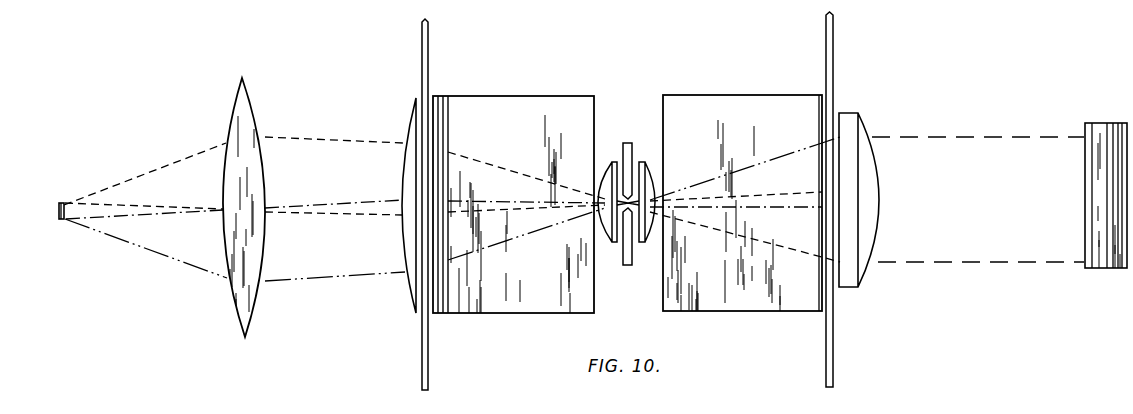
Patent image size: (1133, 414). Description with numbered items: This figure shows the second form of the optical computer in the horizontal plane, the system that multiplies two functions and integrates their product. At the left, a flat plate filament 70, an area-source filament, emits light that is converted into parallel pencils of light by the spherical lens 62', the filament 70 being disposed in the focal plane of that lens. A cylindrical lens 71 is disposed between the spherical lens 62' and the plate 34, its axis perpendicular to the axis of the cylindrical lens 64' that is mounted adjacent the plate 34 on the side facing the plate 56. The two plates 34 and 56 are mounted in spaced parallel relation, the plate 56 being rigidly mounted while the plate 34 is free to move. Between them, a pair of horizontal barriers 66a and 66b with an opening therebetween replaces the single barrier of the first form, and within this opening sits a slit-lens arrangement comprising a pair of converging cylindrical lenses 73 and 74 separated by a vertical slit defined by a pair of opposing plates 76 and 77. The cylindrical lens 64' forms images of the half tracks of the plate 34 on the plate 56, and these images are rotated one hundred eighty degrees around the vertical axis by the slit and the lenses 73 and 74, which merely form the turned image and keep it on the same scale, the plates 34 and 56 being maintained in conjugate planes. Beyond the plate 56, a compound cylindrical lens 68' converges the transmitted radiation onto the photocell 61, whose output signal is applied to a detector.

The flat plate filament 70 is at (58, 212).
The spherical lens 62' is at (222, 207).
The cylindrical lens 71 is at (405, 173).
The plate 34 is at (422, 47).
The horizontal barrier 66a is at (547, 102).
The cylindrical lens 64' is at (463, 204).
The converging cylindrical lens 73 is at (613, 245).
The converging cylindrical lens 74 is at (643, 245).
The opposing plate 77 is at (627, 143).
The opposing plate 76 is at (628, 267).
The horizontal barrier 66b is at (759, 100).
The plate 56 is at (833, 33).
The compound cylindrical lens 68' is at (874, 187).
The photocell 61 is at (1093, 123).